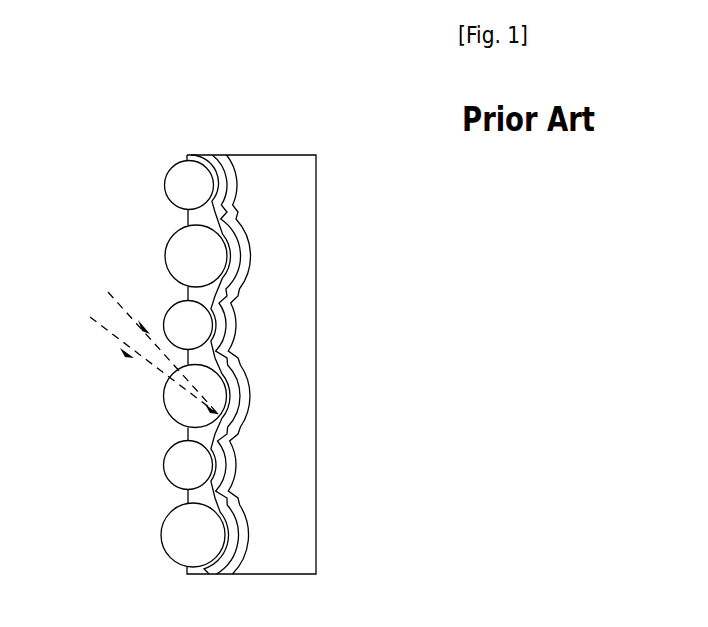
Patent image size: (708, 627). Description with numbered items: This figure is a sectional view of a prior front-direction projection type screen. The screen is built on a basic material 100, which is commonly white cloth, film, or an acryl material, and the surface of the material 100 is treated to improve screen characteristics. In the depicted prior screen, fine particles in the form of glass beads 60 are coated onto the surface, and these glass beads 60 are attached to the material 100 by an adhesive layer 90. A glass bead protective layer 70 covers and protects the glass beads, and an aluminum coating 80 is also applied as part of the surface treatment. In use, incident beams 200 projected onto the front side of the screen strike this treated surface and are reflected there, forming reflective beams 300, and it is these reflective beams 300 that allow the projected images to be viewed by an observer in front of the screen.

The glass beads 60 is at (176, 248).
The glass bead protective layer 70 is at (192, 157).
The aluminum coating 80 is at (213, 155).
The adhesive layer 90 is at (240, 155).
The material 100 is at (288, 168).
The incident beams 200 is at (122, 357).
The reflective beams 300 is at (143, 335).